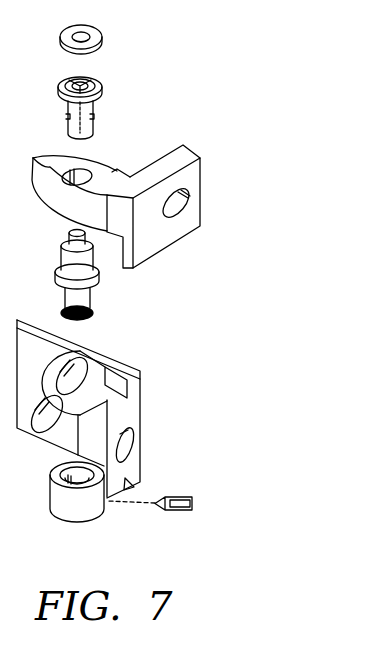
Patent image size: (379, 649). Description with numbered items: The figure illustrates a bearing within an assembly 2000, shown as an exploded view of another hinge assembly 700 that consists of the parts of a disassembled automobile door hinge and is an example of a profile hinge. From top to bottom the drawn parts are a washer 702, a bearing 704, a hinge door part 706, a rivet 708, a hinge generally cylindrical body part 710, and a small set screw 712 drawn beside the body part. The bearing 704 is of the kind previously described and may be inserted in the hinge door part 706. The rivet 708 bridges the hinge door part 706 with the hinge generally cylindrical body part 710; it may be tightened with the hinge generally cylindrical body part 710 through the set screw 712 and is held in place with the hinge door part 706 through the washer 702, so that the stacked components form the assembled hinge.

The assembly 2000 is at (280, 103).
The hinge assembly 700 is at (265, 207).
The washer 702 is at (101, 42).
The bearing 704 is at (95, 122).
The hinge door part 706 is at (205, 166).
The rivet 708 is at (90, 300).
The hinge generally cylindrical body part 710 is at (140, 402).
The set screw 712 is at (196, 501).